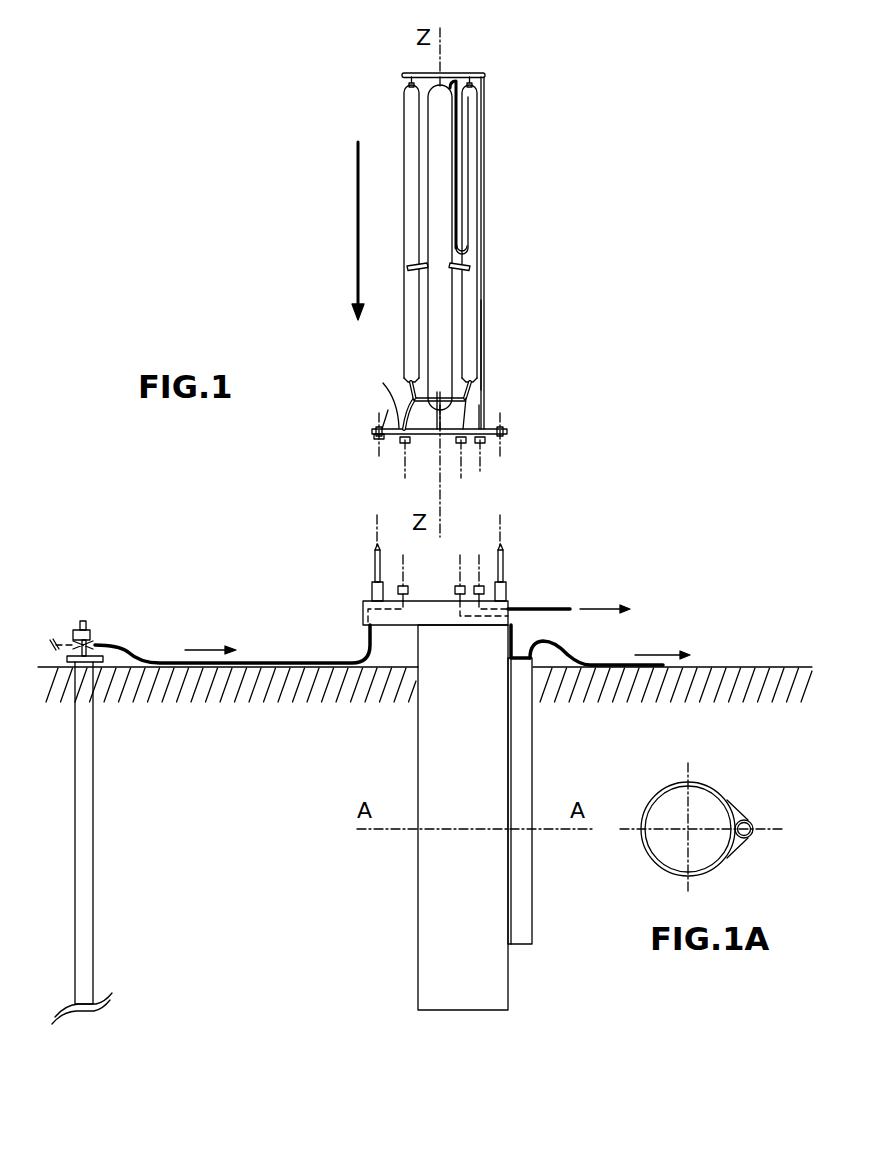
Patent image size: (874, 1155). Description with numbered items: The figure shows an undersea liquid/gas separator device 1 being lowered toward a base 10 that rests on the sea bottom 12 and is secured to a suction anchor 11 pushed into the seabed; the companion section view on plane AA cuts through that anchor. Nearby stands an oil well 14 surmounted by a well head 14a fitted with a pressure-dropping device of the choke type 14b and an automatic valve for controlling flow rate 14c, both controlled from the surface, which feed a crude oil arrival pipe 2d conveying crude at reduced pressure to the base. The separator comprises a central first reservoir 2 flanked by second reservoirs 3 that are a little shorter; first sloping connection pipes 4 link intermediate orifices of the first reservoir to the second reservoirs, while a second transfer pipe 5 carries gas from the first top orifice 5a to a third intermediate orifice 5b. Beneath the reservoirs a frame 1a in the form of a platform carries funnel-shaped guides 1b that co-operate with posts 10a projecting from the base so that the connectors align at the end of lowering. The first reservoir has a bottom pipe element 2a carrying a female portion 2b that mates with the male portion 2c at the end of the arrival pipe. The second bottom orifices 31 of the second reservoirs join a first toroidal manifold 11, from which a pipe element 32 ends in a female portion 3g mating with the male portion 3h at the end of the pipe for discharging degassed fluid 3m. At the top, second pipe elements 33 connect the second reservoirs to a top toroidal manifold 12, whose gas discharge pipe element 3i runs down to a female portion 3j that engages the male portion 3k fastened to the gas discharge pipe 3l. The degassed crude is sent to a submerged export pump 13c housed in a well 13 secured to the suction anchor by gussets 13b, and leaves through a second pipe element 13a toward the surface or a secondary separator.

In FIG. 1, the undersea liquid/gas separator device 1 is at (522, 304).
In FIG. 1, the suction anchor 11 is at (400, 908).
In FIG. 1A, the suction anchor 11 is at (675, 872).
In FIG. 1, the sea bottom 12 is at (730, 667).
In FIG. 1, the frame 1a is at (388, 418).
In FIG. 1, the funnel-shaped guides 1b is at (372, 433).
In FIG. 1, the central first reservoir 2 is at (438, 120).
In FIG. 1, the pipe element 2a is at (400, 405).
In FIG. 1, the female portion of automatic connector 2b is at (402, 445).
In FIG. 1, the male portion of automatic connector 2c is at (403, 592).
In FIG. 1, the crude oil arrival pipe 2d is at (145, 658).
In FIG. 1, the second reservoirs 3 is at (410, 192).
In FIG. 1, the second bottom orifices 31 is at (478, 388).
In FIG. 1, the pipe element 32 is at (468, 415).
In FIG. 1, the second pipe element 33 is at (408, 80).
In FIG. 1, the female portion of automatic connector 3g is at (465, 445).
In FIG. 1, the male portion of automatic connector 3h is at (460, 578).
In FIG. 1, the gas discharge pipe element 3i is at (484, 345).
In FIG. 1, the female portion of automatic connector 3j is at (487, 441).
In FIG. 1, the male portion of automatic connector 3k is at (494, 596).
In FIG. 1, the gas discharge pipe 3l is at (560, 608).
In FIG. 1, the pipe for discharging degassed fluid 3m is at (518, 627).
In FIG. 1, the first sloping connection pipes 4 is at (470, 266).
In FIG. 1, the second transfer pipe 5 is at (458, 150).
In FIG. 1, the first top orifice 5a is at (452, 81).
In FIG. 1, the third intermediate orifice 5b is at (470, 222).
In FIG. 1, the base 10 is at (360, 610).
In FIG. 1, the posts 10a is at (374, 555).
In FIG. 1, the well 13 is at (522, 882).
In FIG. 1A, the well 13 is at (752, 824).
In FIG. 1, the second pipe element for discharging degassed fluid 13a is at (560, 662).
In FIG. 1A, the gussets 13b is at (735, 810).
In FIG. 1A, the submerged export pump 13c is at (748, 840).
In FIG. 1, the oil well 14 is at (80, 860).
In FIG. 1, the well head 14a is at (70, 622).
In FIG. 1, the pressure-dropping device of the choke type 14b is at (96, 665).
In FIG. 1, the automatic valve for controlling flow rate 14c is at (94, 640).